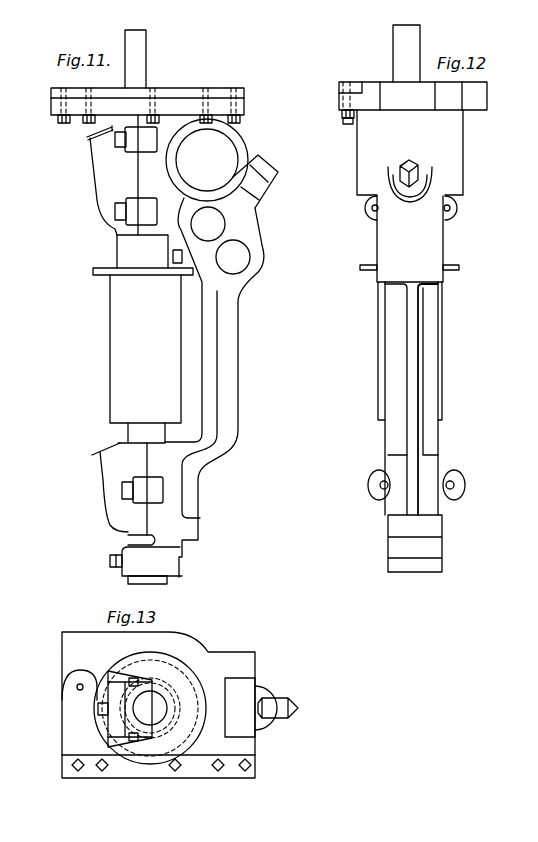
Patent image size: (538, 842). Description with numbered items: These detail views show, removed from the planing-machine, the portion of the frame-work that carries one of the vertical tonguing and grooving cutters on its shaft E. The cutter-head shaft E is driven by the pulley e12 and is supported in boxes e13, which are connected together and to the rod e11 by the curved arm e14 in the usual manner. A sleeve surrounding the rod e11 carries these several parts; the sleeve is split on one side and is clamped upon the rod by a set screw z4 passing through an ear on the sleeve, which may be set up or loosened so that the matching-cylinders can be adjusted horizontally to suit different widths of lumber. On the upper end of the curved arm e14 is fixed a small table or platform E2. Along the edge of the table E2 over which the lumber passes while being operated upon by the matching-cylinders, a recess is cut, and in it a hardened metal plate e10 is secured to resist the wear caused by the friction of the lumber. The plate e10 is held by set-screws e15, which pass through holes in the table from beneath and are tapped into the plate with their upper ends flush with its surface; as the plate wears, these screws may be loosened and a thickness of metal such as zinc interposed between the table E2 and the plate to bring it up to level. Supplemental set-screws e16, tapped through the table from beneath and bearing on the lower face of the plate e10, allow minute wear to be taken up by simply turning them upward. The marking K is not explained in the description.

In FIG. 11, the vertical shaft E is at (155, 45).
In FIG. 12, the vertical shaft E is at (423, 33).
In FIG. 13, the vertical shaft E is at (158, 704).
In FIG. 11, the table E2 is at (50, 105).
In FIG. 12, the table E2 is at (489, 88).
In FIG. 13, the table E2 is at (201, 657).
In FIG. 11, the hardened metal plate e10 is at (231, 85).
In FIG. 12, the hardened metal plate e10 is at (356, 82).
In FIG. 13, the hardened metal plate e10 is at (203, 783).
In FIG. 11, the rod e11 is at (224, 118).
In FIG. 13, the rod e11 is at (150, 708).
In FIG. 11, the pulley e12 is at (112, 382).
In FIG. 12, the pulley e12 is at (378, 355).
In FIG. 11, the box e13 is at (96, 203).
In FIG. 12, the box e13 is at (410, 196).
In FIG. 11, the curved arm e14 is at (244, 352).
In FIG. 12, the curved arm e14 is at (412, 368).
In FIG. 11, the set-screw e15 is at (63, 125).
In FIG. 12, the set-screw e15 is at (342, 115).
In FIG. 11, the supplemental set-screw e16 is at (86, 126).
In FIG. 12, the supplemental set-screw e16 is at (342, 127).
In FIG. 11, the set screw z4 is at (279, 178).
In FIG. 11, the direction marker K is at (214, 160).